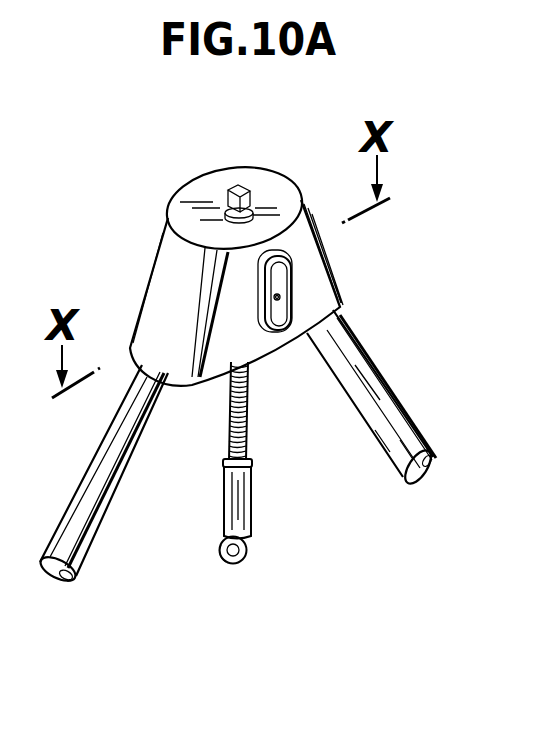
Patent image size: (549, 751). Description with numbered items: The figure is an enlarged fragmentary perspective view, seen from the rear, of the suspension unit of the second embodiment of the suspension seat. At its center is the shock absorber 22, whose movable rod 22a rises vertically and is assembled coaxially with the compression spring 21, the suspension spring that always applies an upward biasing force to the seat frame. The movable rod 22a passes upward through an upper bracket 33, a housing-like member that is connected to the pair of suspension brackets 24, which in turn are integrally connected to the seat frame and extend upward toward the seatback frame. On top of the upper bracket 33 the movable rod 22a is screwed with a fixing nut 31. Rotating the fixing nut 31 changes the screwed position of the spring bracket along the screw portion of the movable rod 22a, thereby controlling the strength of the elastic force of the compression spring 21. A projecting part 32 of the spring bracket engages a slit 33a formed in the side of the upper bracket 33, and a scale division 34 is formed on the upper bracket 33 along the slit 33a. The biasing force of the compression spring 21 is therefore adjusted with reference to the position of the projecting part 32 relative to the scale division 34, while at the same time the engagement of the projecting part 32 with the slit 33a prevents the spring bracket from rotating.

The compression spring 21 is at (222, 437).
The shock absorber 22 is at (250, 503).
The movable rod 22a is at (247, 383).
The suspension brackets 24 is at (102, 455).
The fixing nut 31 is at (228, 205).
The projecting part 32 is at (282, 302).
The upper bracket 33 is at (270, 186).
The slit 33a is at (290, 272).
The scale division 34 is at (292, 300).